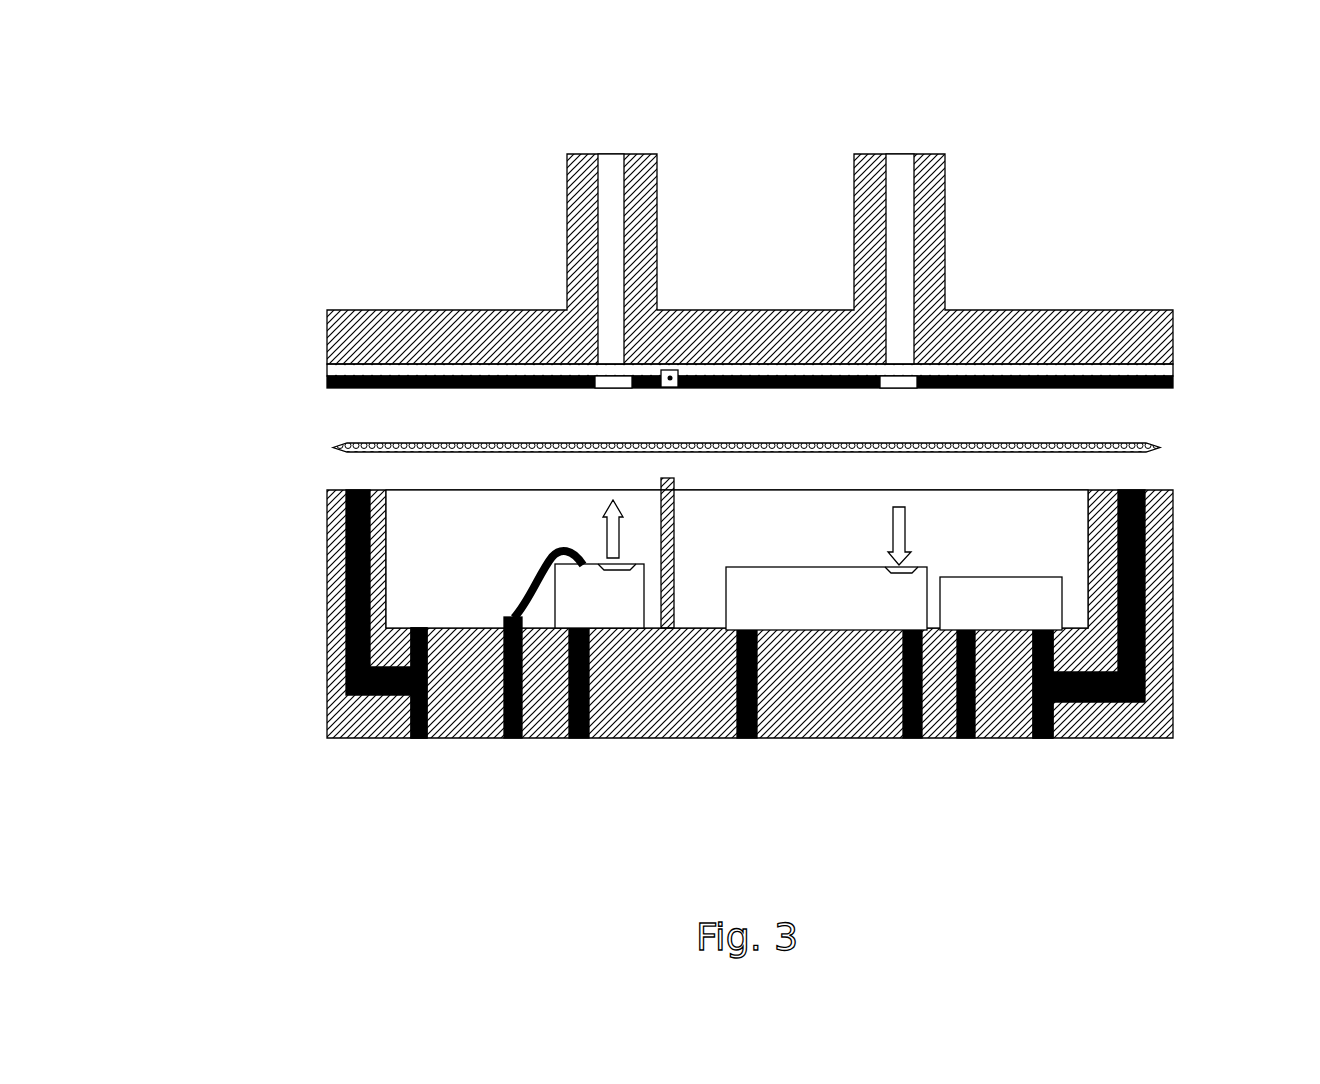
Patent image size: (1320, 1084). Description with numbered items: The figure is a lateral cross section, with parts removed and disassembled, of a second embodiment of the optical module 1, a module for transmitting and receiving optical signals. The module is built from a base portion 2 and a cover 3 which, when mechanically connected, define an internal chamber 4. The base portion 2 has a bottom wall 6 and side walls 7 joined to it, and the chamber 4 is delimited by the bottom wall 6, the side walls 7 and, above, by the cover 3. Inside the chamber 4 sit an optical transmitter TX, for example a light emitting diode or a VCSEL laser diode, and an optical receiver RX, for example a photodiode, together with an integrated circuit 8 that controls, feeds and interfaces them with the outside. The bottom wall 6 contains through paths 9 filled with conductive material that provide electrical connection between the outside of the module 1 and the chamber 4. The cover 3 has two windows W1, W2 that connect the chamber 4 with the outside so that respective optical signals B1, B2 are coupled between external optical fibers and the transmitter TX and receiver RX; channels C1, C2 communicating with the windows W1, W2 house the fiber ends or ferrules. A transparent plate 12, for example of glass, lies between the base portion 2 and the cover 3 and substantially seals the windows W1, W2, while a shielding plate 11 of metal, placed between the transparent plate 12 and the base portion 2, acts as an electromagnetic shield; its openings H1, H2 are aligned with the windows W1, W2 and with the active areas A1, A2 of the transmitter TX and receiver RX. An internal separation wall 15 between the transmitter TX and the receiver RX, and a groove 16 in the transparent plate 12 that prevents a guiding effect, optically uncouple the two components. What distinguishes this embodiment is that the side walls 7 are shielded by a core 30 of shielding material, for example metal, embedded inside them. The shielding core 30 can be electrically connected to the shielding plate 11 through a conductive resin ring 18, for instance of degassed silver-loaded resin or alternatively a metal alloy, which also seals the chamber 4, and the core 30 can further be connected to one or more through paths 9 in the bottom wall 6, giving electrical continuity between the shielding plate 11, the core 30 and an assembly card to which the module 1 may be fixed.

The optical module 1 is at (165, 96).
The base portion 2 is at (288, 690).
The cover portion 3 is at (490, 237).
The chamber 4 is at (417, 541).
The bottom wall 6 is at (447, 662).
The side walls 7 is at (327, 575).
The integrated circuit 8 is at (993, 598).
The through paths 9 is at (580, 738).
The shielding plate 11 is at (1175, 386).
The transparent plate 12 is at (337, 368).
The internal separation wall 15 is at (675, 518).
The groove 16 is at (673, 384).
The conductive resin ring 18 is at (1085, 447).
The shielding core 30 is at (348, 488).
The first channel C1 is at (612, 237).
The second channel C2 is at (900, 240).
The first window W1 is at (611, 350).
The second window W2 is at (899, 353).
The first opening H1 is at (612, 386).
The second opening H2 is at (898, 388).
The first optical signal B1 is at (600, 535).
The second optical signal B2 is at (888, 528).
The optical transmitter TX is at (572, 592).
The optical receiver RX is at (790, 607).
The active area of the optical transmitter A1 is at (618, 570).
The active area of the optical receiver A2 is at (900, 572).